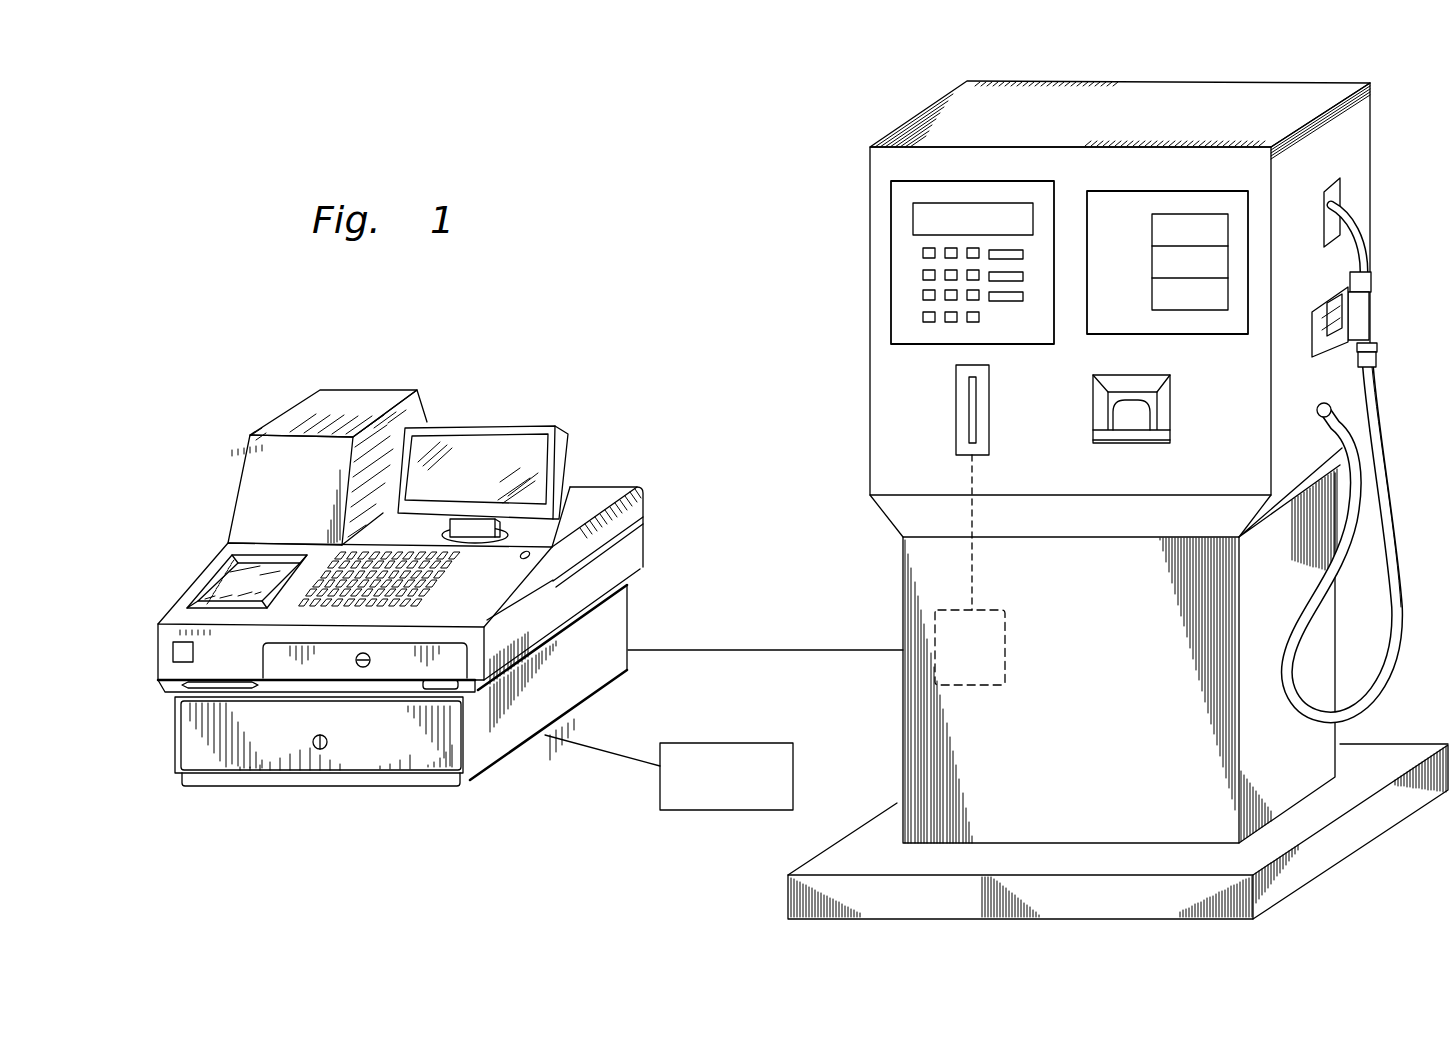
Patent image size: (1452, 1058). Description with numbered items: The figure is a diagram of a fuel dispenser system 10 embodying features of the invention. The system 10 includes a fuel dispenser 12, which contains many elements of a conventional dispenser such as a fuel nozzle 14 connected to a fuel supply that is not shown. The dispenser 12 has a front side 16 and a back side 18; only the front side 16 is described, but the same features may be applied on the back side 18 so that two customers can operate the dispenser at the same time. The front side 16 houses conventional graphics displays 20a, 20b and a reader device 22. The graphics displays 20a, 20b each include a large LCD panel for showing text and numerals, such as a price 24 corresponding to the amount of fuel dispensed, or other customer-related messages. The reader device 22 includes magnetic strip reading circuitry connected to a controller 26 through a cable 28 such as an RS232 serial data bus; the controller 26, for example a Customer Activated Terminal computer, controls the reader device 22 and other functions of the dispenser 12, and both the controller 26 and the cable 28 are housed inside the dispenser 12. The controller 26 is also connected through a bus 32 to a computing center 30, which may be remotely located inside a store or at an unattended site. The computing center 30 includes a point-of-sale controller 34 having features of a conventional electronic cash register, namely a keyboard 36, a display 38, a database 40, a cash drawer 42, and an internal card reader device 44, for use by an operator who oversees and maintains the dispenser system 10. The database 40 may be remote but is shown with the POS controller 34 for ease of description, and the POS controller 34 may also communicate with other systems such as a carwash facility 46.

The fuel dispenser system 10 is at (607, 256).
The fuel dispenser 12 is at (884, 109).
The fuel nozzle 14 is at (1377, 395).
The front side 16 is at (878, 243).
The back side 18 is at (1372, 140).
The graphics display 20a is at (1205, 312).
The graphics display 20b is at (912, 213).
The reader device 22 is at (956, 430).
The price 24 is at (1163, 228).
The controller 26 is at (1008, 655).
The cable 28 is at (982, 560).
The computing center 30 is at (590, 448).
The bus 32 is at (730, 648).
The point-of-sale controller 34 is at (650, 485).
The keyboard 36 is at (443, 573).
The display 38 is at (493, 483).
The database 40 is at (176, 652).
The cash drawer 42 is at (384, 750).
The internal card reader device 44 is at (178, 684).
The carwash facility 46 is at (745, 745).